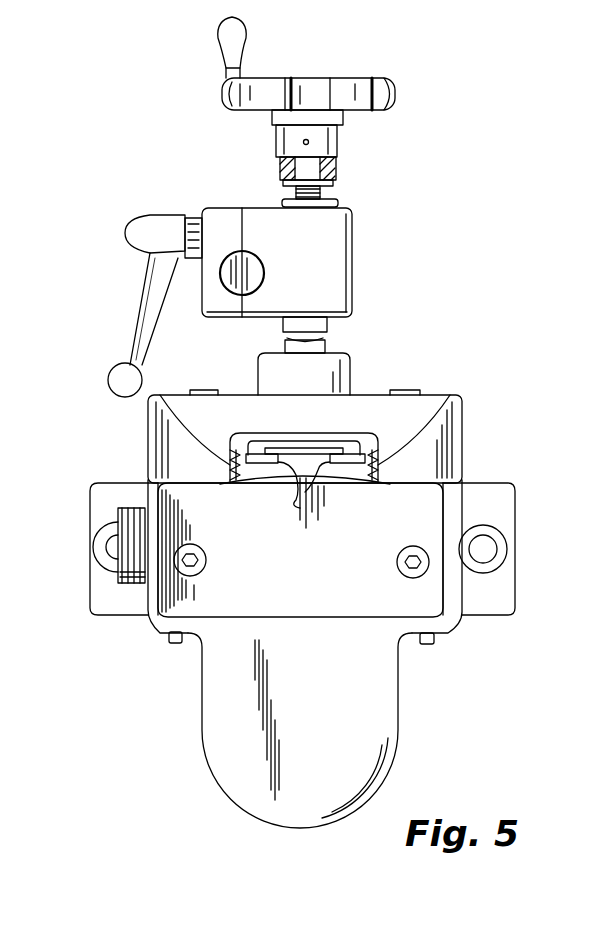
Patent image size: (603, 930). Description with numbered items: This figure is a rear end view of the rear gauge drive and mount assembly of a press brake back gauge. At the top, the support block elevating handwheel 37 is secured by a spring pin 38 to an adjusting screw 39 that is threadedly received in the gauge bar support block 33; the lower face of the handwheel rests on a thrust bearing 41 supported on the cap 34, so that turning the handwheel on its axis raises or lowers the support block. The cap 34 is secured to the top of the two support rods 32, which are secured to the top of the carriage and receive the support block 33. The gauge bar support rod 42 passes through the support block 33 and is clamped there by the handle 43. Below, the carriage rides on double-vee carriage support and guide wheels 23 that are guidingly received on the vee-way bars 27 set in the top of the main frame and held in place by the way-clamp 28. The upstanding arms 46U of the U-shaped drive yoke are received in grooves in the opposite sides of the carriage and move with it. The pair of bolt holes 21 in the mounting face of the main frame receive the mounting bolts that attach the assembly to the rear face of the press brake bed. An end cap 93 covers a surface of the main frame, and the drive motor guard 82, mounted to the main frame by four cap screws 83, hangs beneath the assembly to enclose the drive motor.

The support block elevating handwheel 37 is at (380, 80).
The spring pin 38 is at (309, 142).
The thrust bearing 41 is at (278, 156).
The cap 34 is at (337, 170).
The adjusting screw 39 is at (324, 193).
The handle 43 is at (152, 222).
The gauge bar support block 33 is at (330, 272).
The gauge bar support rod 42 is at (238, 294).
The support rods 32 is at (330, 345).
The way-clamp 28 is at (343, 450).
The double-vee carriage support and guide wheels 23 is at (232, 455).
The vee-way bars 27 is at (305, 495).
The upstanding arms 46U is at (156, 492).
The bolt holes 21 is at (103, 553).
The end cap 93 is at (180, 594).
The cap screws 83 is at (175, 645).
The drive motor guard 82 is at (220, 748).